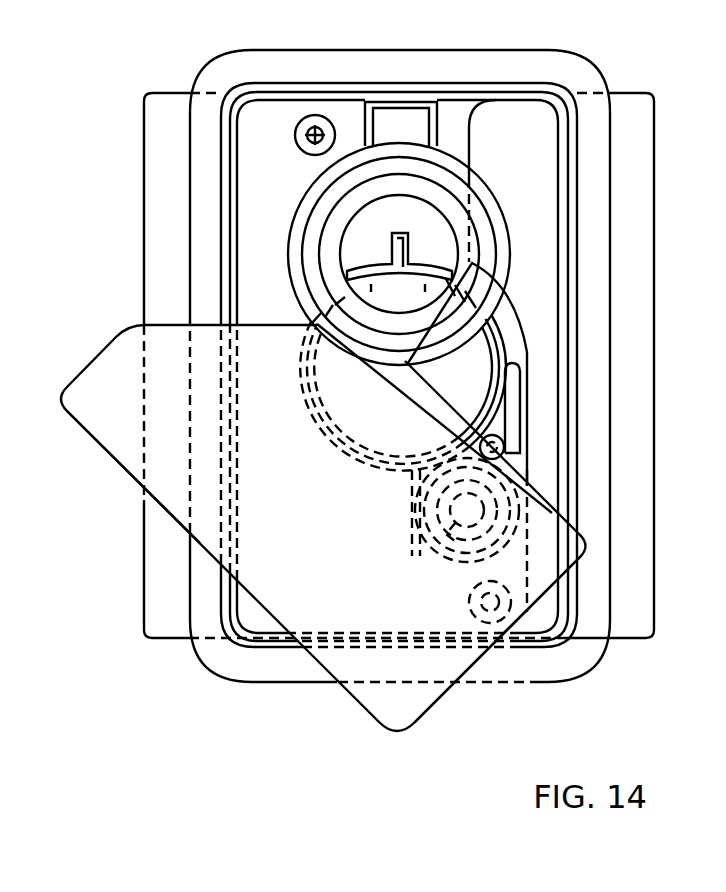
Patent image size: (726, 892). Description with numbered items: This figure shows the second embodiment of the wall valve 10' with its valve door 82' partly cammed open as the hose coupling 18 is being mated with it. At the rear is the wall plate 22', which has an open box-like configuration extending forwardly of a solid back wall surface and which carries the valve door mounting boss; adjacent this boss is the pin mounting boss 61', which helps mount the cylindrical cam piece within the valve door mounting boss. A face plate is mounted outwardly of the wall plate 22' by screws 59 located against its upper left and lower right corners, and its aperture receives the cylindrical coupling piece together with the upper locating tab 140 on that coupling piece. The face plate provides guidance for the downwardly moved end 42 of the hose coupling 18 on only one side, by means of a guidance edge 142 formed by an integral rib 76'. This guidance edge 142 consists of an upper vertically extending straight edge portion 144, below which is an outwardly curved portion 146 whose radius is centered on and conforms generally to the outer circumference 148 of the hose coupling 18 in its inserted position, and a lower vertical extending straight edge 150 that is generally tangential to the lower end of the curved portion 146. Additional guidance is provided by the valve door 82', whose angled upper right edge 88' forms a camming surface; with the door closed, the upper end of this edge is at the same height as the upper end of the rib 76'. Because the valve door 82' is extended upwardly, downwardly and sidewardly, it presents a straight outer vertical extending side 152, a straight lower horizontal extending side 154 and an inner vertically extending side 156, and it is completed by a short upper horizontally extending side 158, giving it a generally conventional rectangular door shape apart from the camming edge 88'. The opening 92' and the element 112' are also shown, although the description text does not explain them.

The wall valve 10' is at (369, 400).
The wall plate 22' is at (408, 416).
The integral rib 76' is at (464, 365).
The angled upper right edge 88' is at (397, 366).
The upper vertically extending straight edge portion 144 is at (471, 158).
The hose coupling 18 is at (309, 210).
The outer circumference 148 is at (484, 188).
The downwardly moved end 42 is at (433, 177).
The upper locating tab 140 is at (397, 251).
The screws 59 is at (318, 117).
The inner vertically extending side 156 is at (446, 392).
The lens opening 92' is at (385, 439).
The outwardly curved portion 146 is at (515, 302).
The guidance edge 142 is at (523, 345).
The lower vertical extending straight edge 150 is at (523, 478).
The pin mounting boss 61' is at (603, 408).
The pin 112' is at (594, 437).
The valve door 82' is at (465, 606).
The short upper horizontally extending side 158 is at (92, 365).
The straight outer vertical extending side 152 is at (125, 470).
The straight lower horizontal extending side 154 is at (497, 681).